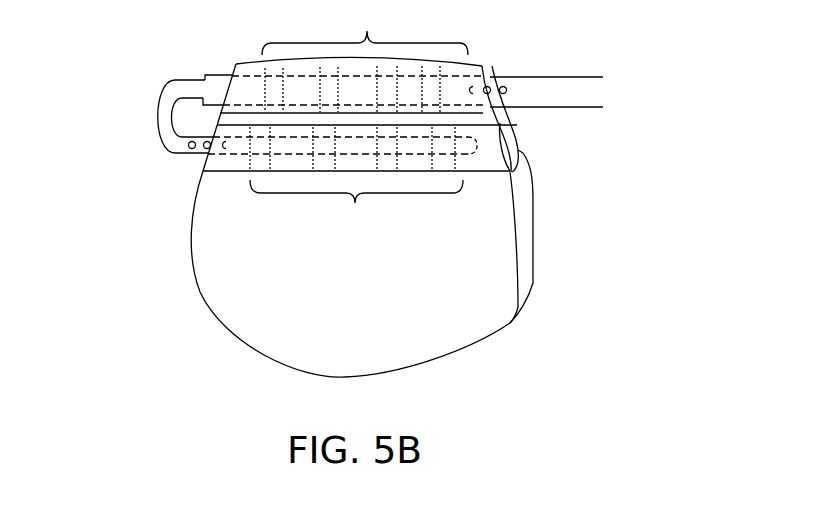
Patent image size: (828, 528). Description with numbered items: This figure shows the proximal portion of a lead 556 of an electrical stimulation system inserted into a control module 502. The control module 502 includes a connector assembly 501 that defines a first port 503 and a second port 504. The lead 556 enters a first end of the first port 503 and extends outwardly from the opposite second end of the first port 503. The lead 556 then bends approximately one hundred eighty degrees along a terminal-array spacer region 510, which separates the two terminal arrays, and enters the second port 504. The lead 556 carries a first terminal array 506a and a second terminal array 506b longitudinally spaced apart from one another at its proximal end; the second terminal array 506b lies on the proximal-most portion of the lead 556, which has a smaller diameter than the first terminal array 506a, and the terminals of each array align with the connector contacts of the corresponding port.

The connector assembly 501 is at (220, 57).
The control module 502 is at (537, 283).
The first port 503 is at (485, 72).
The second port 504 is at (512, 148).
The first terminal array 506a is at (365, 27).
The second terminal array 506b is at (356, 206).
The terminal-array spacer region 510 is at (163, 117).
The lead 556 is at (575, 88).